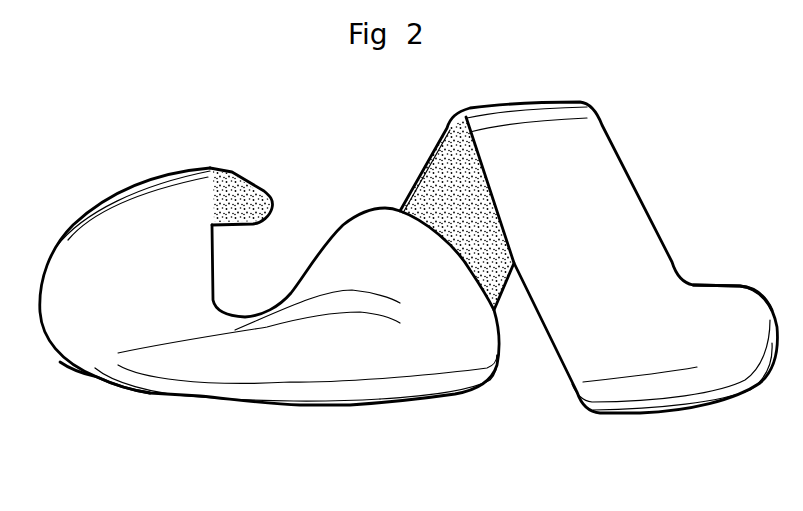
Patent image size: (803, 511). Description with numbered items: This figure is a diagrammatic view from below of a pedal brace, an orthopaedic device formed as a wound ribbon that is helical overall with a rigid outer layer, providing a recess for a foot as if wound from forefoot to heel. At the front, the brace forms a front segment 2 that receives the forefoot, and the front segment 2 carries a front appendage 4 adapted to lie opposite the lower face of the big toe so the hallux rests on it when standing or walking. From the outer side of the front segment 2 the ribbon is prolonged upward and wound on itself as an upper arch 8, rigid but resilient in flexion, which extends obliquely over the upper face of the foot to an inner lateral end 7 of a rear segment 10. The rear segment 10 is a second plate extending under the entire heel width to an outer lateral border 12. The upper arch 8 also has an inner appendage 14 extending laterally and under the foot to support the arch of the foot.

The front segment 2 is at (623, 203).
The front appendage 4 is at (740, 286).
The inner lateral end 7 is at (137, 392).
The upper arch 8 is at (443, 160).
The rear segment 10 is at (100, 275).
The outer lateral border 12 is at (232, 193).
The inner appendage 14 is at (368, 377).